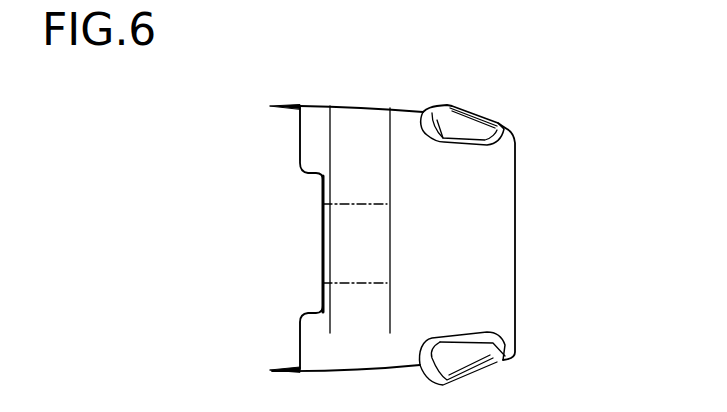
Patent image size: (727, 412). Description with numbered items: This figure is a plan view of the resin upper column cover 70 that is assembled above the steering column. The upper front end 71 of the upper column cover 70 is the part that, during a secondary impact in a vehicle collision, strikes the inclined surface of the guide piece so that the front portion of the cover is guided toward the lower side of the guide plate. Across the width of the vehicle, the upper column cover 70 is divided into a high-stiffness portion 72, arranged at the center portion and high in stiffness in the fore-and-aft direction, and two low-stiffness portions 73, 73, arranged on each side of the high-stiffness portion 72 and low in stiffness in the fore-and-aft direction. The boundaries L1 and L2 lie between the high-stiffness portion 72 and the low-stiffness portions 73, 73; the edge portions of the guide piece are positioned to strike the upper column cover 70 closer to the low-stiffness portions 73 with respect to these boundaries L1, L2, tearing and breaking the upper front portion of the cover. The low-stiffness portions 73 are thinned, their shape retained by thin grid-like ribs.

The upper column cover 70 is at (510, 238).
The upper front end 71 is at (323, 243).
The high-stiffness portion 72 is at (370, 230).
The low-stiffness portion 73 is at (350, 141).
The boundary L1 is at (376, 203).
The boundary L2 is at (376, 283).